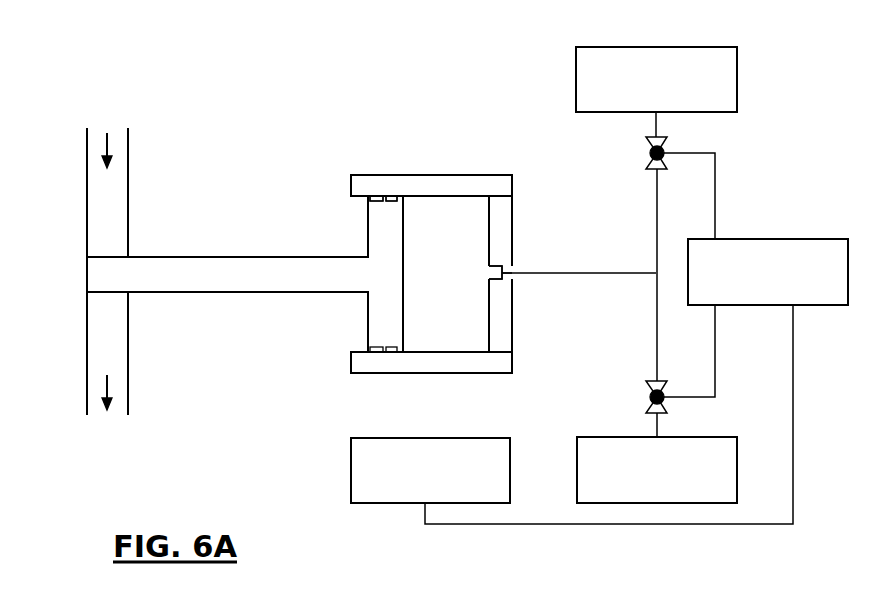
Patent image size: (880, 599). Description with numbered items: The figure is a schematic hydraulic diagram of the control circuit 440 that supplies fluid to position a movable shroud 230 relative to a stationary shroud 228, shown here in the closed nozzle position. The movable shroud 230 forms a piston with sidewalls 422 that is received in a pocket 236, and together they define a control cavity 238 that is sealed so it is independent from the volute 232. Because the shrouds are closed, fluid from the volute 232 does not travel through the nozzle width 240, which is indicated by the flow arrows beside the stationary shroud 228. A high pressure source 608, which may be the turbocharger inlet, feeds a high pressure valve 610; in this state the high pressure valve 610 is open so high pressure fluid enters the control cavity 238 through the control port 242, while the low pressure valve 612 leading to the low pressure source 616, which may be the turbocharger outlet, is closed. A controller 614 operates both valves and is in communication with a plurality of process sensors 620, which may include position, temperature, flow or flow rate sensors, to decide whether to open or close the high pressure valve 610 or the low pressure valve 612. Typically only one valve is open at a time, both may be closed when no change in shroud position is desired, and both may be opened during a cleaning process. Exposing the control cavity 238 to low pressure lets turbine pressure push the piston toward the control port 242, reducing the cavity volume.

The stationary shroud 228 is at (87, 343).
The volute 232 is at (122, 123).
The nozzle width 240 is at (122, 227).
The movable shroud 230 is at (230, 257).
The pocket 236 is at (362, 351).
The sidewalls 422 is at (385, 217).
The control cavity 238 is at (444, 205).
The control port 242 is at (525, 278).
The control circuit 440 is at (545, 126).
The high pressure source 608 is at (624, 47).
The high pressure valve 610 is at (648, 153).
The low pressure valve 612 is at (648, 397).
The controller 614 is at (772, 239).
The low pressure source 616 is at (682, 437).
The process sensors 620 is at (407, 438).